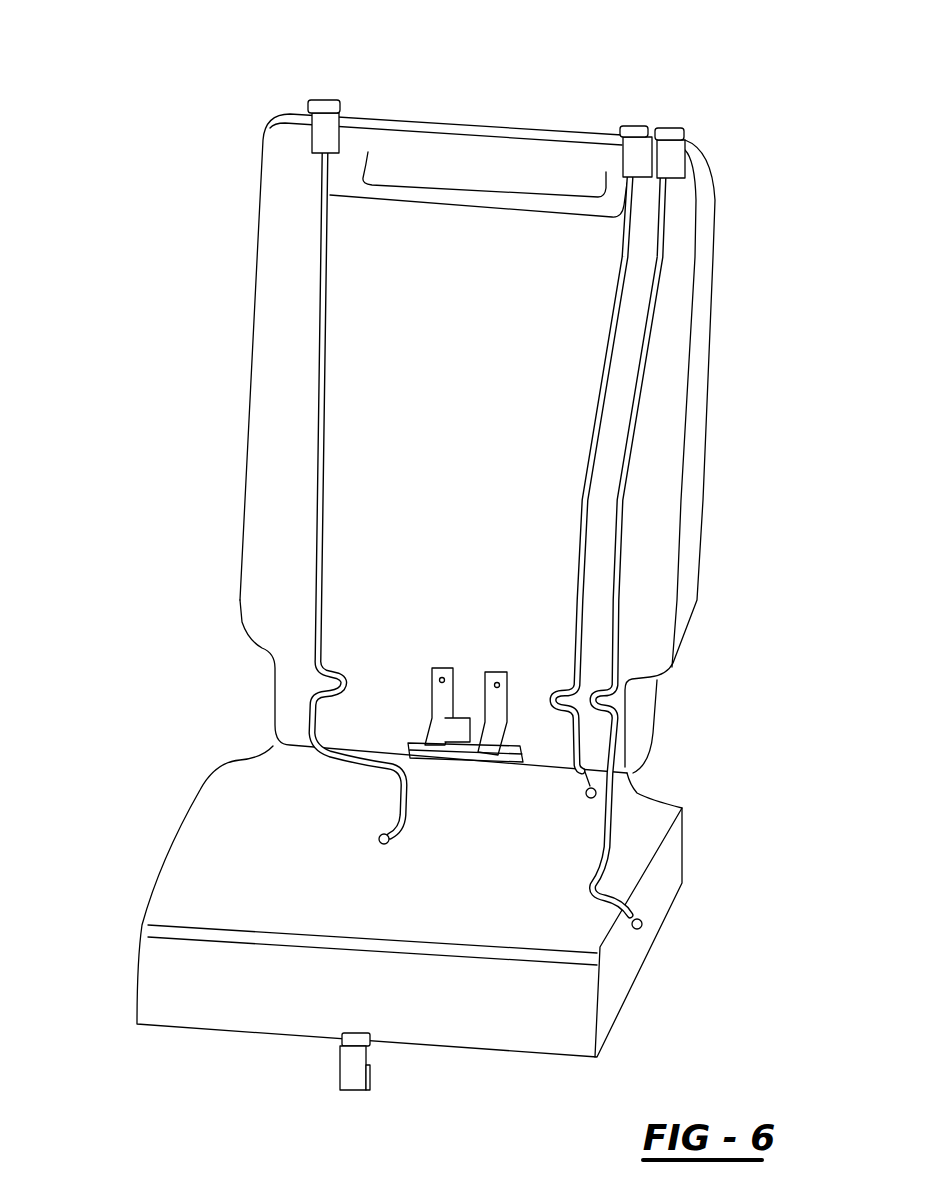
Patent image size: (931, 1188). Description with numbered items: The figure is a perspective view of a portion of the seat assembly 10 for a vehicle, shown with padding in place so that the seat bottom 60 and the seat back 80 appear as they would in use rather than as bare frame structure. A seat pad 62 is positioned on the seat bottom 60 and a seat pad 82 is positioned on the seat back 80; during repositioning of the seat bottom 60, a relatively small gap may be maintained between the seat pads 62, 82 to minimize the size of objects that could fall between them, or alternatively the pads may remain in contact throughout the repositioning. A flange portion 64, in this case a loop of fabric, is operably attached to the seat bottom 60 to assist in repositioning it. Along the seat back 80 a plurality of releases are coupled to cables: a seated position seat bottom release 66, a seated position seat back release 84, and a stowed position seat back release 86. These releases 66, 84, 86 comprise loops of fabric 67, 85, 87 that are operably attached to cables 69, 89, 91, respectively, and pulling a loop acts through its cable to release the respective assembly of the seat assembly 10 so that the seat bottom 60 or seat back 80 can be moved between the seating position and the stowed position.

The seat assembly 10 is at (171, 292).
The seat bottom 60 is at (190, 802).
The seat pad 62 is at (277, 923).
The flange portion 64 is at (342, 1070).
The seated position seat bottom release 66 is at (690, 108).
The loop of fabric 67 is at (683, 132).
The cable 69 is at (662, 257).
The seat back 80 is at (699, 480).
The seat pad 82 is at (667, 358).
The seated position seat back release 84 is at (639, 98).
The loop of fabric 85 is at (638, 126).
The stowed position seat back release 86 is at (310, 91).
The loop of fabric 87 is at (325, 100).
The cable 89 is at (617, 283).
The cable 91 is at (320, 335).